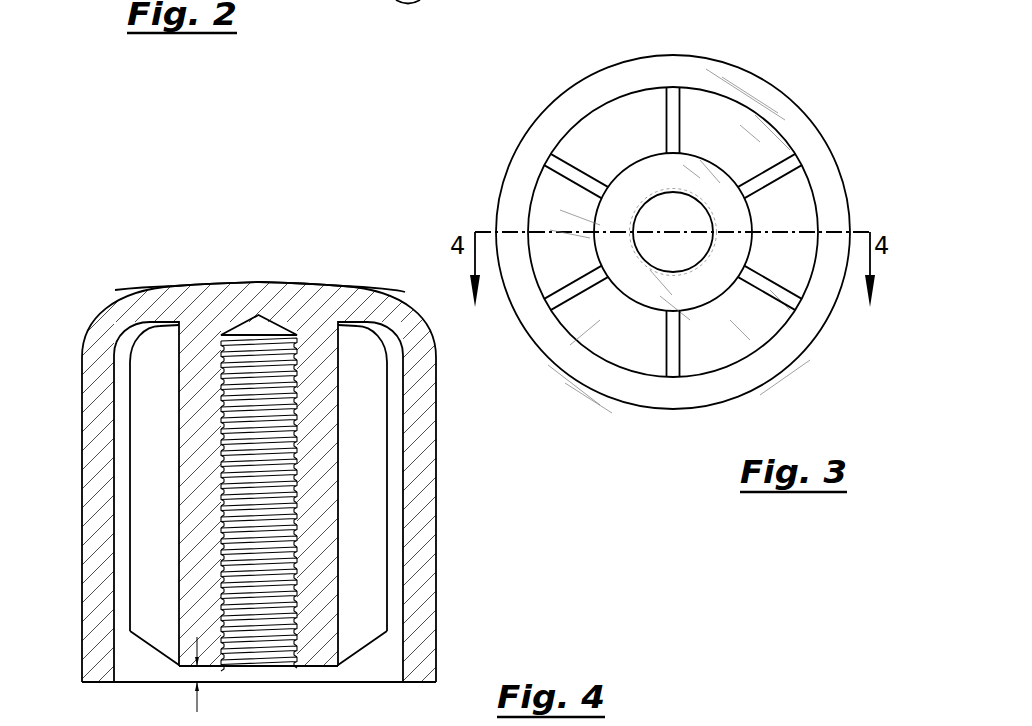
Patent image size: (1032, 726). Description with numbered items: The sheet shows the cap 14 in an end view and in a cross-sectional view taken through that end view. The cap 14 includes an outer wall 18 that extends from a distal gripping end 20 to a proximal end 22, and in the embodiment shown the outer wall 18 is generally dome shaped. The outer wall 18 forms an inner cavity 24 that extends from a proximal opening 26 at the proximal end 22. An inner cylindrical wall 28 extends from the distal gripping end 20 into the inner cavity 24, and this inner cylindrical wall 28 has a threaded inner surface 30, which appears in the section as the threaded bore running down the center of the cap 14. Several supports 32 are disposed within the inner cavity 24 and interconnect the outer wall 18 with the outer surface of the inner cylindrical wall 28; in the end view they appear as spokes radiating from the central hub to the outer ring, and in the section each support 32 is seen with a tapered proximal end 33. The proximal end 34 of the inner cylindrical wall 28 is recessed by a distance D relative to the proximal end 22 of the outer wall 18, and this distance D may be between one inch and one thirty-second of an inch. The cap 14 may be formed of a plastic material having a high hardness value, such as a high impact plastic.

In FIG. 3, the cap 14 is at (806, 66).
In FIG. 4, the cap 14 is at (124, 272).
In FIG. 4, the outer wall 18 is at (425, 500).
In FIG. 4, the distal gripping end 20 is at (221, 290).
In FIG. 3, the proximal end 22 is at (523, 183).
In FIG. 4, the proximal end 22 is at (425, 665).
In FIG. 3, the inner cavity 24 is at (725, 340).
In FIG. 2, the proximal opening 26 is at (447, 0).
In FIG. 3, the inner cylindrical wall 28 is at (720, 185).
In FIG. 4, the inner cylindrical wall 28 is at (322, 563).
In FIG. 4, the threaded inner surface 30 is at (293, 637).
In FIG. 3, the supports 32 is at (668, 118).
In FIG. 4, the supports 32 is at (157, 383).
In FIG. 4, the tapered proximal end 33 is at (150, 645).
In FIG. 4, the proximal end of inner cylindrical wall 34 is at (318, 652).
In FIG. 4, the distance D is at (197, 672).